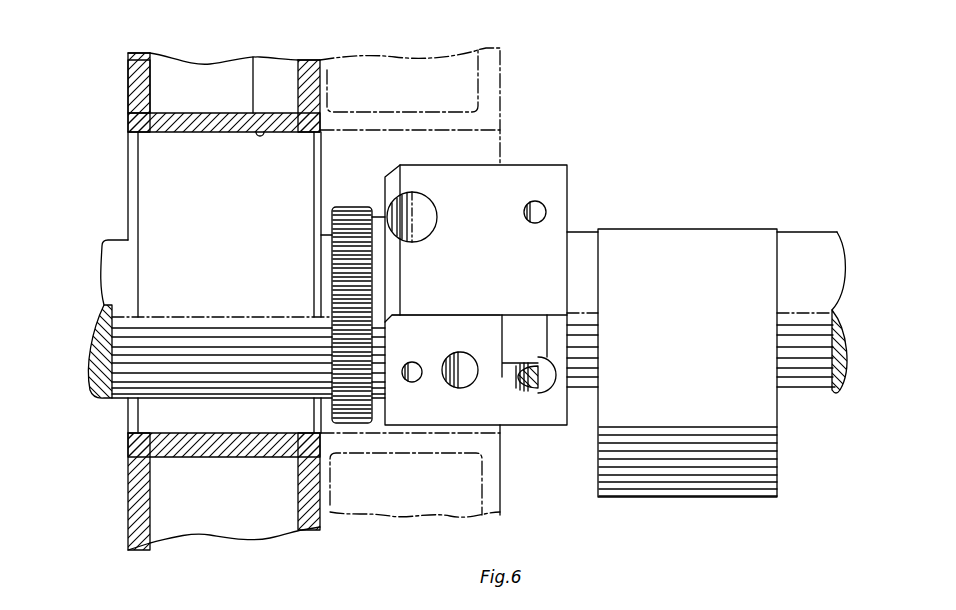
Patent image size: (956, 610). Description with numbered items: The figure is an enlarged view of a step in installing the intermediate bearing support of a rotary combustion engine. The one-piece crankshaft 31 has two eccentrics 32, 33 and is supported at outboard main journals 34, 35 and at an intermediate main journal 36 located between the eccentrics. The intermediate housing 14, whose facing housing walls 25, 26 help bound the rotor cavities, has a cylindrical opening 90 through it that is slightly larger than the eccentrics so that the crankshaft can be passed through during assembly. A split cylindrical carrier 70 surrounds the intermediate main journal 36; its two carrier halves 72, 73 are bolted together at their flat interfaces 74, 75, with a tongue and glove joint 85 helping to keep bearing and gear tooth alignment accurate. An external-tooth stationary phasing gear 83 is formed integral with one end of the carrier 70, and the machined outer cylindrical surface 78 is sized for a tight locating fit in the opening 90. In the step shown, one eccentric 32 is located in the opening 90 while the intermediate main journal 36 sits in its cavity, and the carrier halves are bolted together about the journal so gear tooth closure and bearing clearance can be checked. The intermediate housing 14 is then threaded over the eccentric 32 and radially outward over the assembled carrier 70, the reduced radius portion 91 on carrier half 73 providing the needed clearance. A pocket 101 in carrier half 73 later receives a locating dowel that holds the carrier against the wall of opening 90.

The intermediate housing 14 is at (138, 82).
The housing wall 25 is at (128, 110).
The housing wall 26 is at (320, 92).
The one-piece crankshaft 31 is at (838, 232).
The eccentric 32 is at (160, 225).
The eccentric 33 is at (733, 483).
The main journal 34 is at (116, 278).
The main journal 35 is at (795, 252).
The intermediate main journal 36 is at (584, 390).
The split cylindrical carrier 70 is at (570, 215).
The carrier half 72 is at (567, 183).
The carrier half 73 is at (560, 392).
The flat interface 74 is at (416, 322).
The flat interface 75 is at (466, 307).
The outer cylindrical surface 78 is at (512, 185).
The stationary phasing gear 83 is at (355, 405).
The tongue and glove joint 85 is at (537, 347).
The cylindrical opening 90 is at (253, 62).
The reduced radius portion 91 is at (513, 428).
The pocket 101 is at (465, 354).